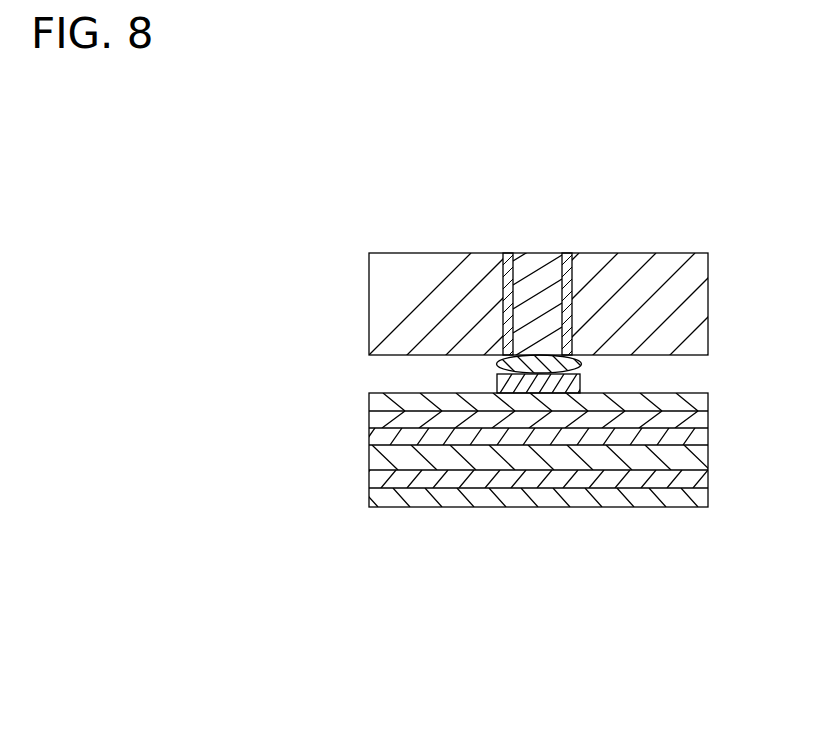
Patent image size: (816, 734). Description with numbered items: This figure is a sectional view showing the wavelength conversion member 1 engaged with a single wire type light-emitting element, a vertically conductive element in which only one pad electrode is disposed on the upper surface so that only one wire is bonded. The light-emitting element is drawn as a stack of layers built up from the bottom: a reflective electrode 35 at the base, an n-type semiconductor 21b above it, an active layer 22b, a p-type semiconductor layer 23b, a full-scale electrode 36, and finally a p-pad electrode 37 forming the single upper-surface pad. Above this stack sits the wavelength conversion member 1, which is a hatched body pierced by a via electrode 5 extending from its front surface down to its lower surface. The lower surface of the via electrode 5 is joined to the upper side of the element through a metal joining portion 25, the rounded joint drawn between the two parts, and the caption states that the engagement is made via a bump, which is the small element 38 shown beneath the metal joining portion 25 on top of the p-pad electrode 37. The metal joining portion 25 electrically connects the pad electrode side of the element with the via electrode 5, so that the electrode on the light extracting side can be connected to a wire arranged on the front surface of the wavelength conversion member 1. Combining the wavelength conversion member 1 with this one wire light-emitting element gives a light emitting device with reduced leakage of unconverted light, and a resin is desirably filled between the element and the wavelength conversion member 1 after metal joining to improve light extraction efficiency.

The wavelength conversion member 1 is at (630, 170).
The via electrode 5 is at (538, 264).
The metal joining portion 25 is at (497, 363).
The electrode pad 38 is at (580, 380).
The p-pad electrode 37 is at (692, 397).
The p-type semiconductor layer 23b is at (695, 414).
The active layer 22b is at (695, 435).
The n-type semiconductor 21b is at (695, 455).
The full-scale electrode 36 is at (695, 478).
The reflective electrode 35 is at (675, 497).